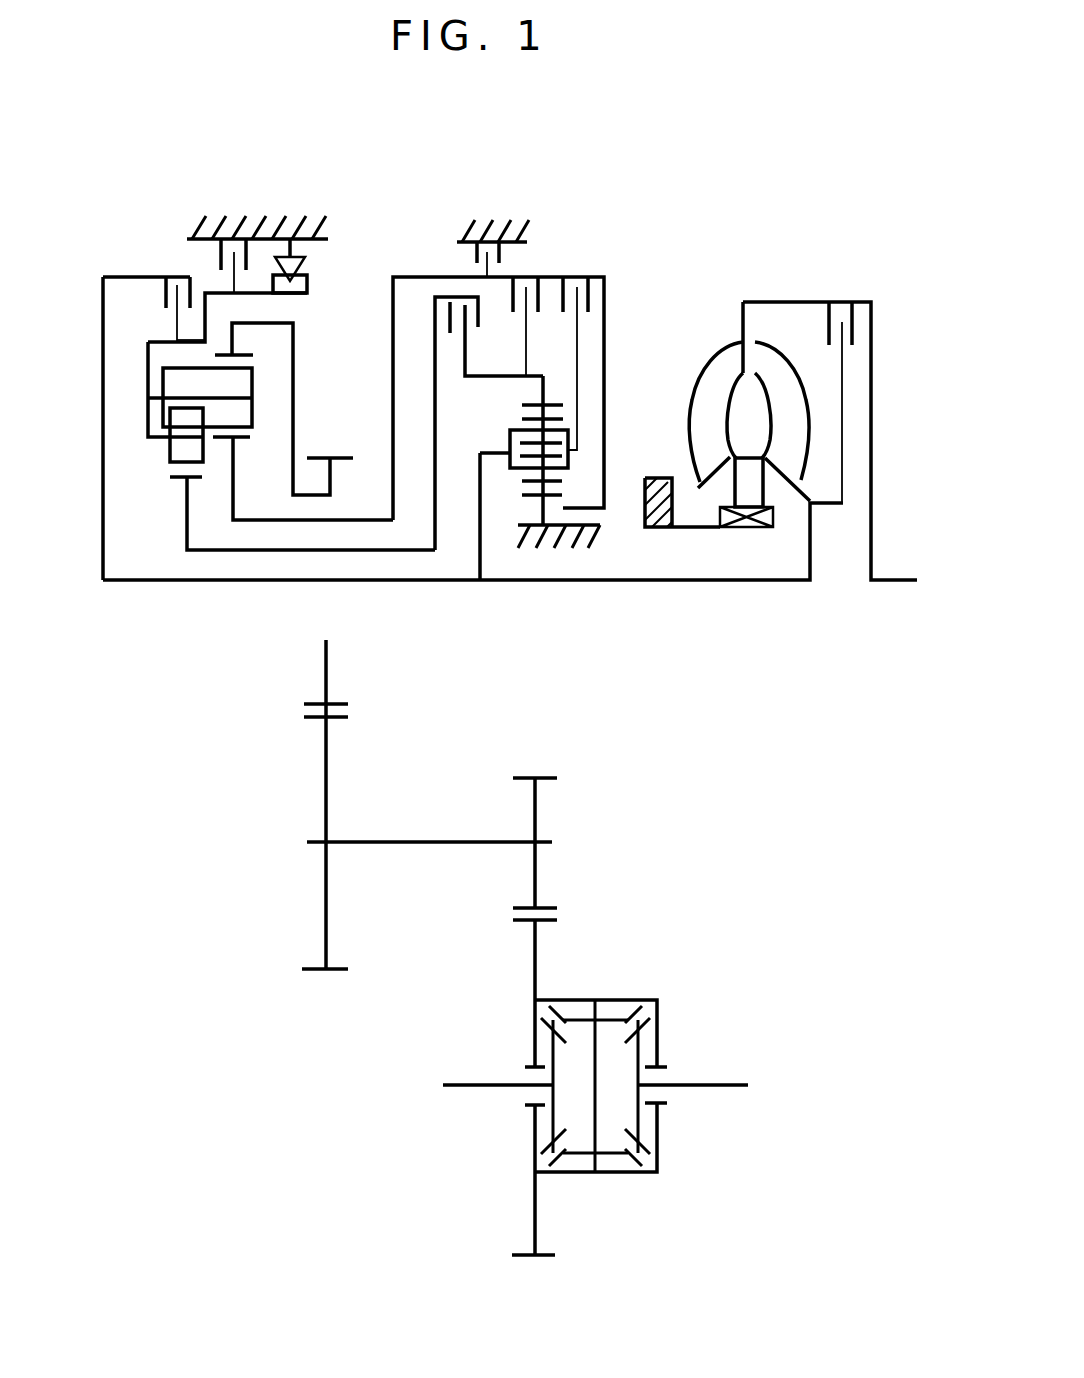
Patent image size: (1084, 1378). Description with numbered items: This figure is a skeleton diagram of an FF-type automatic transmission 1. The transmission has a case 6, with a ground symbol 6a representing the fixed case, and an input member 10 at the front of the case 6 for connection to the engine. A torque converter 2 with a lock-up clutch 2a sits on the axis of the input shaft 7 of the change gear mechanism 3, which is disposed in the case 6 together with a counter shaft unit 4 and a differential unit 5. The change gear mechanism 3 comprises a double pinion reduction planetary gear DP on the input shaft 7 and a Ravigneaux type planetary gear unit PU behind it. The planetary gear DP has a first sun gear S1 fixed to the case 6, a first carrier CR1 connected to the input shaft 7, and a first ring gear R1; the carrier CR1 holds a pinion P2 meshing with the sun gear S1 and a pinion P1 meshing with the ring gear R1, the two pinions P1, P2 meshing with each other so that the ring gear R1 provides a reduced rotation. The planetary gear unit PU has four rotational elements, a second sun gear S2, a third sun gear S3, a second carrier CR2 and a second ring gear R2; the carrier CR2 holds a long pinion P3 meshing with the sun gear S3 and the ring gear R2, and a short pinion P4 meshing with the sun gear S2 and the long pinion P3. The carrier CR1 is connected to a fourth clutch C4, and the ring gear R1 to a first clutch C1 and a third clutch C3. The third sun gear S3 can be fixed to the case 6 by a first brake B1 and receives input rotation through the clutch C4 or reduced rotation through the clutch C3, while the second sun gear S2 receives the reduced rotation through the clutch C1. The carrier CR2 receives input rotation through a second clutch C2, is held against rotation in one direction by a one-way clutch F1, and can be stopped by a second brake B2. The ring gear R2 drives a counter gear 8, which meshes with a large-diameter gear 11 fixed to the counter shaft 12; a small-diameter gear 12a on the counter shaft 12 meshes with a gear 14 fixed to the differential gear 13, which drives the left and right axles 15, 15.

The automatic transmission 1 is at (675, 201).
The torque converter 2 is at (753, 289).
The lock-up clutch 2a is at (856, 333).
The change gear mechanism 3 is at (389, 228).
The counter shaft unit 4 is at (298, 822).
The differential unit 5 is at (690, 983).
The case 6 is at (197, 236).
The case (fixed portion) 6a is at (583, 538).
The input shaft 7 is at (590, 583).
The counter gear 8 is at (340, 458).
The input member 10 is at (884, 580).
The large-diameter gear 11 is at (328, 752).
The counter shaft 12 is at (422, 845).
The small-diameter gear 12a is at (538, 800).
The differential gear 13 is at (625, 1175).
The gear 14 is at (538, 952).
The axles 15 is at (472, 1088).
The planetary gear unit PU is at (132, 371).
The planetary gear DP is at (560, 392).
The first brake B1 is at (484, 233).
The second brake B2 is at (231, 241).
The one-way clutch F1 is at (289, 241).
The first clutch C1 is at (496, 339).
The second clutch C2 is at (181, 295).
The third clutch C3 is at (523, 312).
The fourth clutch C4 is at (573, 349).
The first carrier CR1 is at (570, 459).
The second carrier CR2 is at (147, 356).
The first ring gear R1 is at (527, 405).
The second ring gear R2 is at (258, 353).
The pinion P1 is at (525, 419).
The pinion P2 is at (524, 481).
The long pinion P3 is at (253, 384).
The short pinion P4 is at (170, 449).
The first sun gear S1 is at (536, 497).
The second sun gear S2 is at (178, 480).
The third sun gear S3 is at (246, 440).